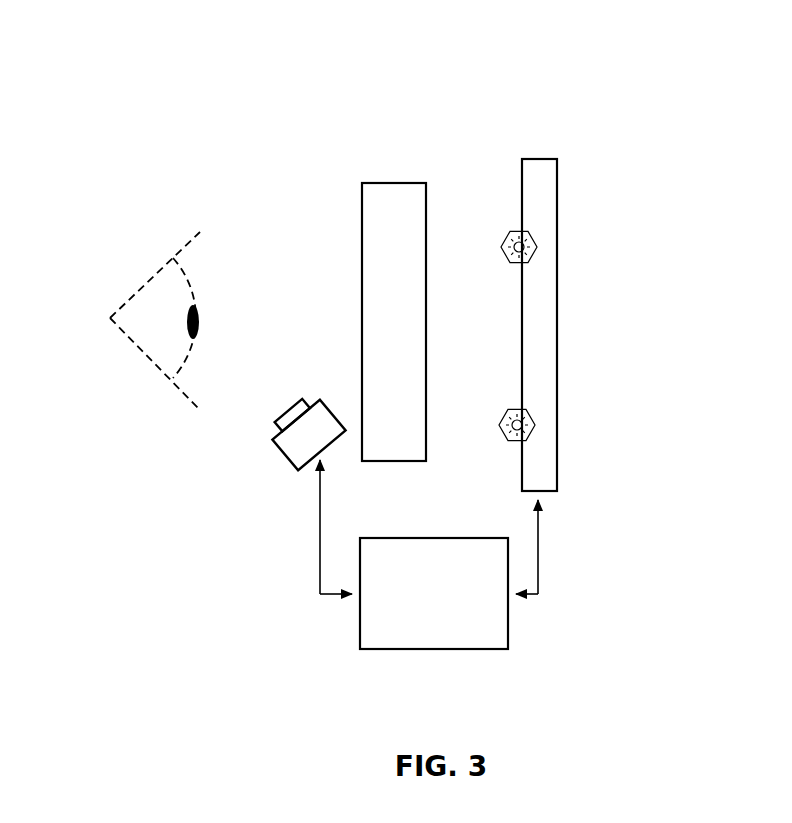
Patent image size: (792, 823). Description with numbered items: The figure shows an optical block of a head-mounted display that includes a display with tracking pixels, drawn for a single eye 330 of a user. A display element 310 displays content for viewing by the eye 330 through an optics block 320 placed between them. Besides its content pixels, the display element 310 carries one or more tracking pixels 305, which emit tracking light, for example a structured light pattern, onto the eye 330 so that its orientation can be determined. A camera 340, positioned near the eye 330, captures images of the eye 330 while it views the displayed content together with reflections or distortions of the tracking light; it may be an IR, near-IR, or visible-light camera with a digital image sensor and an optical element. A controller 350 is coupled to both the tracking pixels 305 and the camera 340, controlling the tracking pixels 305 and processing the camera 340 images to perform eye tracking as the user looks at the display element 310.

The tracking pixels 305 is at (548, 246).
The display element 310 is at (545, 148).
The optics block 320 is at (390, 172).
The eye 330 is at (110, 355).
The camera 340 is at (278, 468).
The controller 350 is at (434, 593).